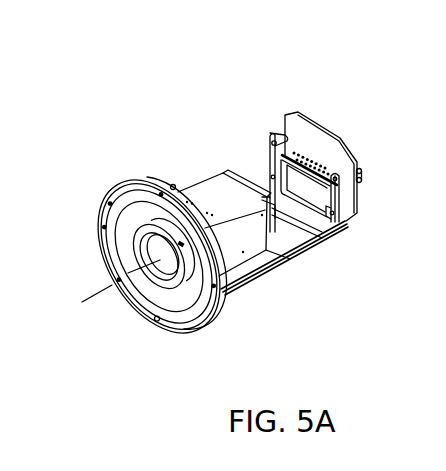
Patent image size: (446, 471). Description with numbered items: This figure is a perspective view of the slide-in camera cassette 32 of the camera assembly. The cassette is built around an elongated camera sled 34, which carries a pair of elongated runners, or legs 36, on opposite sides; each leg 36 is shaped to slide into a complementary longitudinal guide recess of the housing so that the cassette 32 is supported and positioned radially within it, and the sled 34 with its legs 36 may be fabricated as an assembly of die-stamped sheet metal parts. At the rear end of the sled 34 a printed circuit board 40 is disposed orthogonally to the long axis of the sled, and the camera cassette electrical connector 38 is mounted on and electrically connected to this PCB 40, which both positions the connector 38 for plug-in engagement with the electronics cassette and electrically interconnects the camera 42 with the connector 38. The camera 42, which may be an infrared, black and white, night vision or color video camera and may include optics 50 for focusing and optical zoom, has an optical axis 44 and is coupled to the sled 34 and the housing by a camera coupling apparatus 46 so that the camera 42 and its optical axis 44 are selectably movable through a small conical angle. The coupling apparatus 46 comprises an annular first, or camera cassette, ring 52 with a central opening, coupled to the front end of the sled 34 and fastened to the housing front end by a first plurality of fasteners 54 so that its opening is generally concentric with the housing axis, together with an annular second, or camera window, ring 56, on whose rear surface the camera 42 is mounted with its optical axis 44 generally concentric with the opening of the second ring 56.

The slide-in camera cassette 32 is at (311, 187).
The camera sled 34 is at (269, 138).
The legs 36 is at (245, 172).
The camera cassette electrical connector 38 is at (362, 168).
The printed circuit board 40 is at (310, 128).
The camera 42 is at (248, 250).
The optical axis 44 is at (87, 296).
The camera coupling apparatus 46 is at (217, 327).
The optics 50 is at (155, 266).
The first ring 52 is at (184, 331).
The first plurality of fasteners 54 is at (172, 186).
The second ring 56 is at (157, 321).